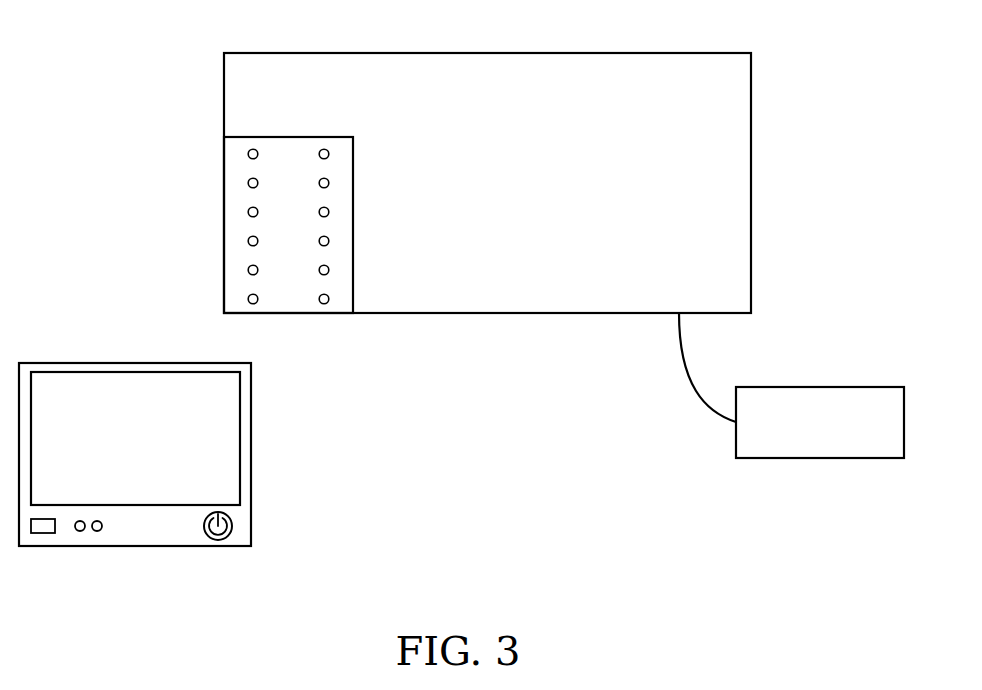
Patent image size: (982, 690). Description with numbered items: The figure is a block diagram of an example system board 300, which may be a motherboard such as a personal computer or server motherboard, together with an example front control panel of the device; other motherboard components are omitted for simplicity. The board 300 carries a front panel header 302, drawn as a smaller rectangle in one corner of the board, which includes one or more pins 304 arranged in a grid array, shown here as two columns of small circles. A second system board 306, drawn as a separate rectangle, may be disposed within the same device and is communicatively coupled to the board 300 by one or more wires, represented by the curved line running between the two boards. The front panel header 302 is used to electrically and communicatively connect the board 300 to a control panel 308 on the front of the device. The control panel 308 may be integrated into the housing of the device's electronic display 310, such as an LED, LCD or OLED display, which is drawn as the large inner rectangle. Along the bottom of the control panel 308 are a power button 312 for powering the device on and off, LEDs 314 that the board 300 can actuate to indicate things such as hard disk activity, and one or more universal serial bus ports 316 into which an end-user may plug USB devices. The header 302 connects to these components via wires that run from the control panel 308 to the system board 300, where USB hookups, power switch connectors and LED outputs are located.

The system board 300 is at (488, 53).
The front panel header 302 is at (289, 137).
The pins 304 is at (248, 183).
The second system board 306 is at (820, 387).
The control panel 308 is at (163, 540).
The electronic display 310 is at (135, 363).
The power button 312 is at (233, 527).
The LEDs 314 is at (97, 531).
The USB ports 316 is at (39, 535).